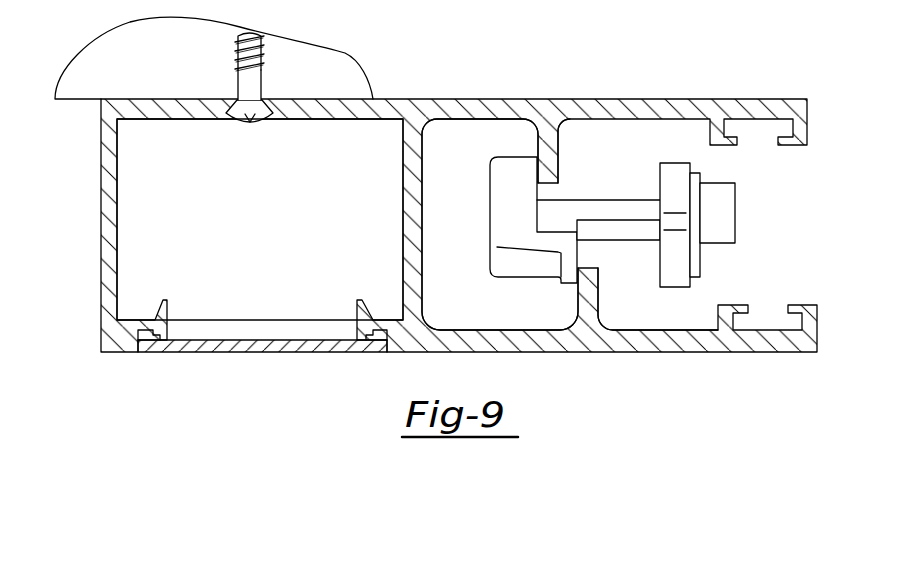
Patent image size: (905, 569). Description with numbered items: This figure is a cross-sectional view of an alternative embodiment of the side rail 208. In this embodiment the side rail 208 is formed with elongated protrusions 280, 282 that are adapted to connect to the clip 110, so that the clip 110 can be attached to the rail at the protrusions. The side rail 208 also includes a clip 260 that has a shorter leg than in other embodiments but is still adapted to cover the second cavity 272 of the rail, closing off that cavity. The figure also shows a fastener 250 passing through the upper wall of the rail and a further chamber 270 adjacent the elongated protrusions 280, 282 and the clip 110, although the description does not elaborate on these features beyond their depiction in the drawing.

The side rail 208 is at (650, 85).
The screw fastener 250 is at (262, 128).
The clip 260 is at (243, 359).
The right chamber 270 is at (641, 171).
The second cavity 272 is at (272, 228).
The elongated protrusion 280 is at (545, 152).
The elongated protrusion 282 is at (587, 293).
The clip 110 is at (633, 227).